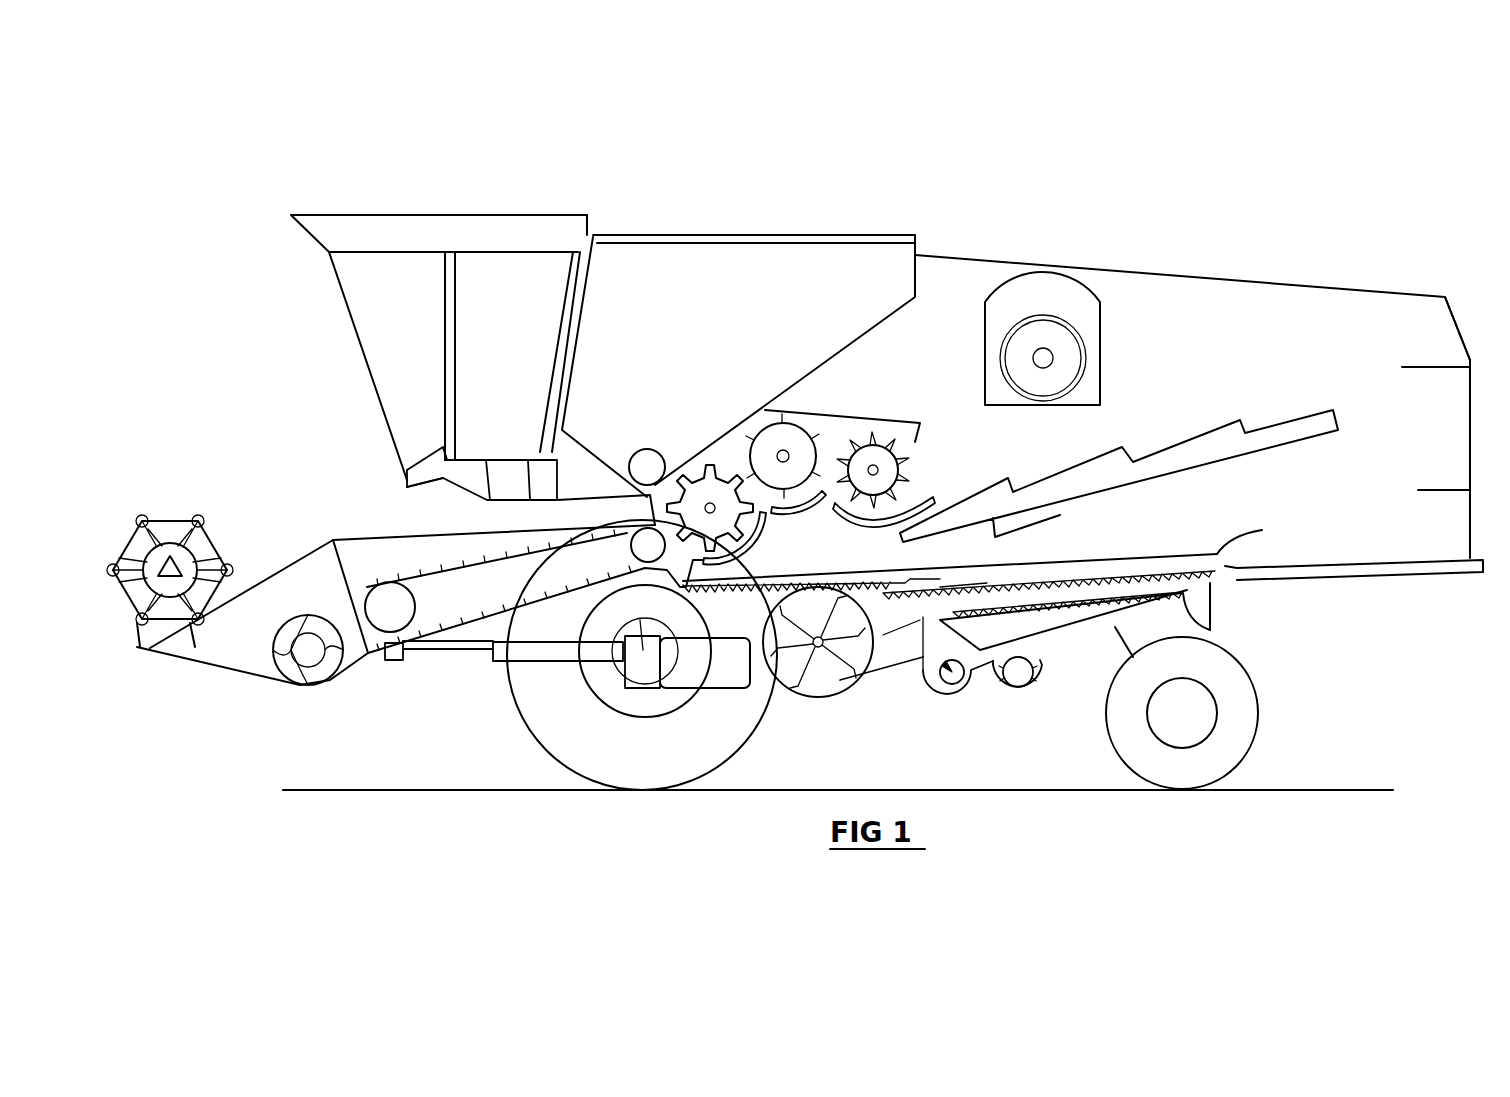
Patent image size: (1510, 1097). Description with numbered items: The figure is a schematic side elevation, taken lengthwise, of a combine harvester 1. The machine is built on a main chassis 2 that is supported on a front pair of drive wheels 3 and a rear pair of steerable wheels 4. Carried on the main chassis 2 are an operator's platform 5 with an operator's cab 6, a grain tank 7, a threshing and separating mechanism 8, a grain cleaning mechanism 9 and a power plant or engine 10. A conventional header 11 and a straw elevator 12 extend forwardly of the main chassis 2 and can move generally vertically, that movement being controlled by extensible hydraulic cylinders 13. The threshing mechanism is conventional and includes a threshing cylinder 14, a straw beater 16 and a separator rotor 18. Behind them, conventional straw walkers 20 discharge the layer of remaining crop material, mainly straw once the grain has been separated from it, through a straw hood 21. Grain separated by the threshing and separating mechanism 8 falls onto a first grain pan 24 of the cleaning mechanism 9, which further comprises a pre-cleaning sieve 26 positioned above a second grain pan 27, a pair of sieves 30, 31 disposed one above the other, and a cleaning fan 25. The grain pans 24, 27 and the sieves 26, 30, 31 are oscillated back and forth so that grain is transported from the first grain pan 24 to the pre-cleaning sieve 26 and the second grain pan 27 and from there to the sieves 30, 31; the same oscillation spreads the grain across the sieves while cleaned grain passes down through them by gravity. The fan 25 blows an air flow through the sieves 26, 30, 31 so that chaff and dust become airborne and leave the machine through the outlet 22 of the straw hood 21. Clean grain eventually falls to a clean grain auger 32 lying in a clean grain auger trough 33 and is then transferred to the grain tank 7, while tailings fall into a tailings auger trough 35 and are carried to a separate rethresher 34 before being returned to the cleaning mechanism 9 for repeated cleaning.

The combine harvester 1 is at (796, 218).
The main chassis 2 is at (1208, 596).
The drive wheels 3 is at (507, 690).
The steerable wheels 4 is at (1258, 710).
The operator's platform 5 is at (432, 490).
The operator's cab 6 is at (345, 318).
The grain tank 7 is at (628, 235).
The threshing and separating mechanism 8 is at (889, 402).
The grain cleaning mechanism 9 is at (1186, 548).
The engine 10 is at (1055, 248).
The header 11 is at (285, 549).
The straw elevator 12 is at (367, 538).
The hydraulic cylinders 13 is at (558, 663).
The threshing cylinder 14 is at (710, 460).
The straw beater 16 is at (781, 420).
The separator rotor 18 is at (915, 455).
The straw walkers 20 is at (1037, 475).
The straw hood 21 is at (1460, 284).
The outlet 22 is at (1391, 597).
The first grain pan 24 is at (778, 583).
The cleaning fan 25 is at (840, 682).
The pre-cleaning sieve 26 is at (965, 575).
The second grain pan 27 is at (915, 627).
The sieve 30 is at (1262, 530).
The sieve 31 is at (1211, 622).
The clean grain auger 32 is at (955, 692).
The clean grain auger trough 33 is at (959, 688).
The rethresher 34 is at (1017, 678).
The tailings auger trough 35 is at (1040, 683).